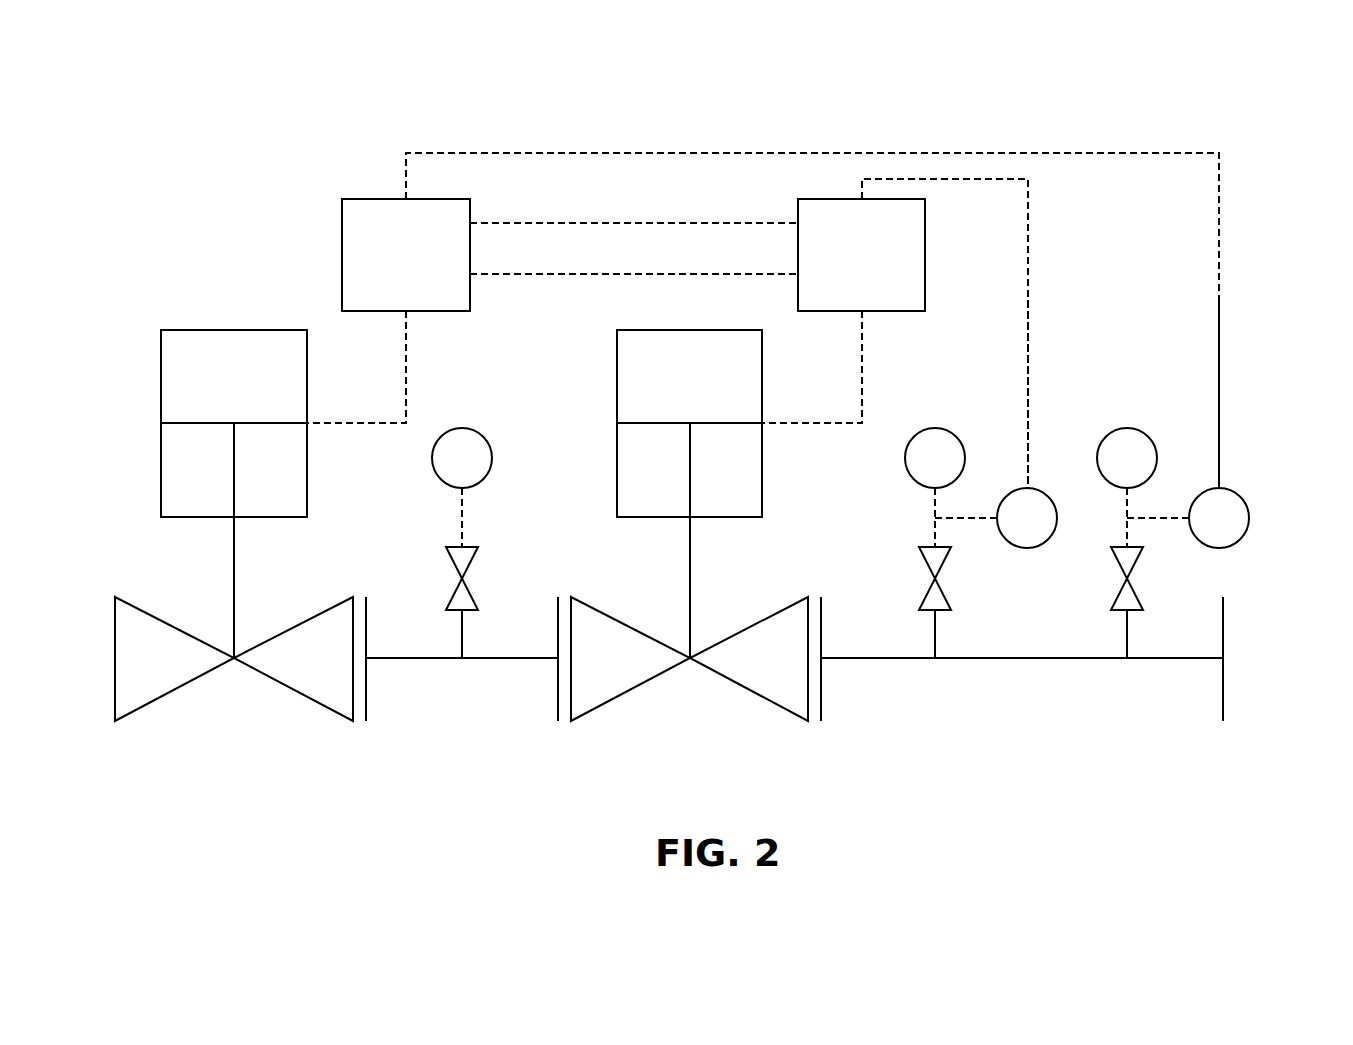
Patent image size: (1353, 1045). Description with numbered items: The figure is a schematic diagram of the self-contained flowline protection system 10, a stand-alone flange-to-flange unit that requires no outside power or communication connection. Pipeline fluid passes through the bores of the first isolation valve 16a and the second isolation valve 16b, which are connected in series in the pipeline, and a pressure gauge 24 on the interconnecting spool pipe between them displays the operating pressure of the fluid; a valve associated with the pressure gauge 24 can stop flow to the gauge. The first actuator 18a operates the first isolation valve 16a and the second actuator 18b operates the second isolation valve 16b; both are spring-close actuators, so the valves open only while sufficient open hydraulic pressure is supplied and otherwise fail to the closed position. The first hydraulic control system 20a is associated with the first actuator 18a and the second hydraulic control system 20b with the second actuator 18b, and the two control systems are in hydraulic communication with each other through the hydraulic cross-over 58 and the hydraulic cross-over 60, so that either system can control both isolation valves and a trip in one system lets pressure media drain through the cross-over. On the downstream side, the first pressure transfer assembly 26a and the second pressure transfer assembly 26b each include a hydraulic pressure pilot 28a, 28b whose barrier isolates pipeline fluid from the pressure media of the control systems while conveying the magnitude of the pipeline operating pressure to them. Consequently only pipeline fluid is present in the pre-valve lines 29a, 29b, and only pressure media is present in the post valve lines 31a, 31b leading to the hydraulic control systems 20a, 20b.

The flowline protection system 10 is at (1245, 148).
The first isolation valve 16a is at (322, 683).
The second isolation valve 16b is at (758, 678).
The first actuator 18a is at (172, 366).
The second actuator 18b is at (636, 364).
The first hydraulic control system 20a is at (362, 240).
The second hydraulic control system 20b is at (907, 277).
The pressure gauge 24 is at (483, 437).
The first pressure transfer assembly 26a is at (1233, 472).
The second pressure transfer assembly 26b is at (1037, 474).
The hydraulic pressure pilot 28a is at (1230, 525).
The hydraulic pressure pilot 28b is at (1030, 530).
The pre-valve line 29a is at (1157, 520).
The pre-valve line 29b is at (967, 520).
The post valve line 31a is at (1219, 370).
The post valve line 31b is at (1028, 300).
The hydraulic cross-over 58 is at (568, 223).
The hydraulic cross-over 60 is at (607, 274).